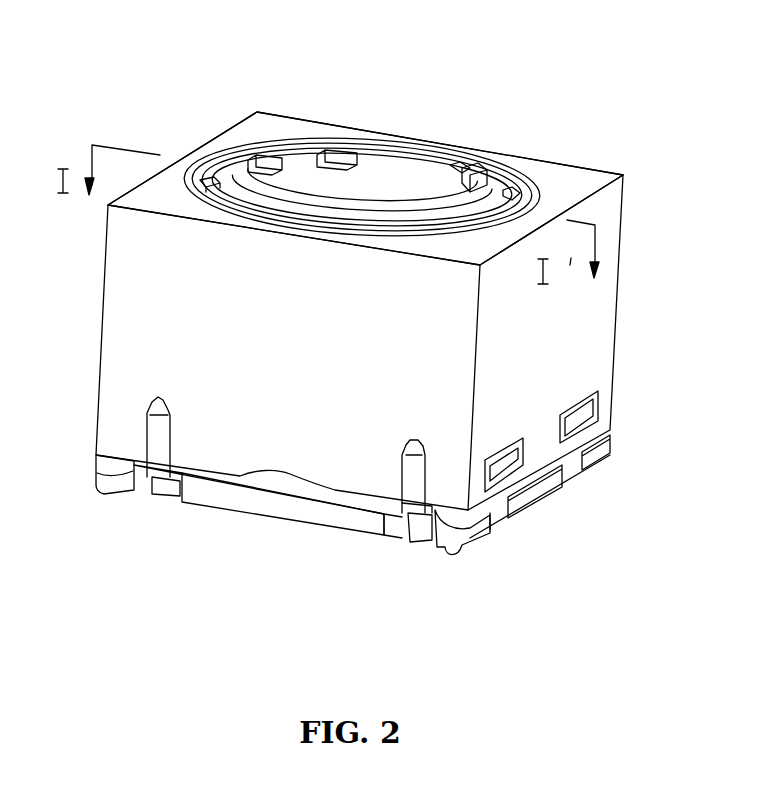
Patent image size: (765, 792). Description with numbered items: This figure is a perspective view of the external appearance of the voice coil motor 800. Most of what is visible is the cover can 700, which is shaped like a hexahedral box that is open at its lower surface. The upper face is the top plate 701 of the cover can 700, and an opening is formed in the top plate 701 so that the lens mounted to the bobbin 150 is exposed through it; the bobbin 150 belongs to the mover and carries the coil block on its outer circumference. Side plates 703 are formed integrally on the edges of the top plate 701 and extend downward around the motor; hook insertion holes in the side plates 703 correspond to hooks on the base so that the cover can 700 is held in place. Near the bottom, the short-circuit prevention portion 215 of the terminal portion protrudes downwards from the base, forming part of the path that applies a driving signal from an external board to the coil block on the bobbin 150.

The voice coil motor 800 is at (440, 142).
The top plate 701 is at (578, 182).
The bobbin 150 is at (293, 185).
The cover can 700 is at (240, 446).
The side plates 703 is at (343, 472).
The short-circuit prevention portion 215 is at (419, 540).